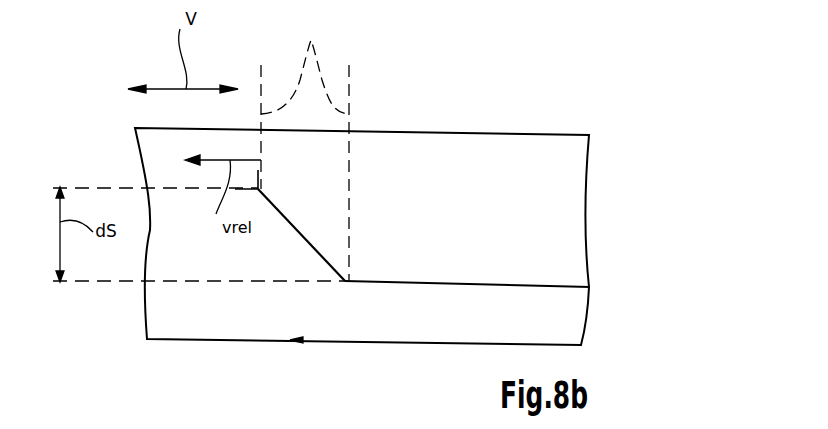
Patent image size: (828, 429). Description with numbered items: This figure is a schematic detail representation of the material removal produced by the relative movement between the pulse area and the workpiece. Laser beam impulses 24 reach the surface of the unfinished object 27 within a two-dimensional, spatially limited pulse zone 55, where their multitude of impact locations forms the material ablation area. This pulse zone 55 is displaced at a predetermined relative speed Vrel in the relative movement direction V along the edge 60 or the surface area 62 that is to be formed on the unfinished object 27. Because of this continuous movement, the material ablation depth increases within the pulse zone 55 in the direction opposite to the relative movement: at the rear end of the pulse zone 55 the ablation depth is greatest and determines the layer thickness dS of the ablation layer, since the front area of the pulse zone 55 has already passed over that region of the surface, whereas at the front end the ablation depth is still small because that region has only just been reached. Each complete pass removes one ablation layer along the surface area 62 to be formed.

The laser beam impulses 24 is at (305, 151).
The pulse zone 55 is at (296, 218).
The edge 60 is at (518, 131).
The surface area 62 is at (537, 213).
The unfinished object 27 is at (252, 320).